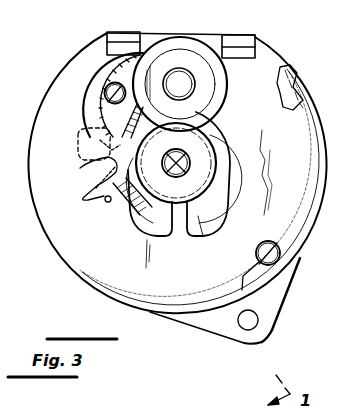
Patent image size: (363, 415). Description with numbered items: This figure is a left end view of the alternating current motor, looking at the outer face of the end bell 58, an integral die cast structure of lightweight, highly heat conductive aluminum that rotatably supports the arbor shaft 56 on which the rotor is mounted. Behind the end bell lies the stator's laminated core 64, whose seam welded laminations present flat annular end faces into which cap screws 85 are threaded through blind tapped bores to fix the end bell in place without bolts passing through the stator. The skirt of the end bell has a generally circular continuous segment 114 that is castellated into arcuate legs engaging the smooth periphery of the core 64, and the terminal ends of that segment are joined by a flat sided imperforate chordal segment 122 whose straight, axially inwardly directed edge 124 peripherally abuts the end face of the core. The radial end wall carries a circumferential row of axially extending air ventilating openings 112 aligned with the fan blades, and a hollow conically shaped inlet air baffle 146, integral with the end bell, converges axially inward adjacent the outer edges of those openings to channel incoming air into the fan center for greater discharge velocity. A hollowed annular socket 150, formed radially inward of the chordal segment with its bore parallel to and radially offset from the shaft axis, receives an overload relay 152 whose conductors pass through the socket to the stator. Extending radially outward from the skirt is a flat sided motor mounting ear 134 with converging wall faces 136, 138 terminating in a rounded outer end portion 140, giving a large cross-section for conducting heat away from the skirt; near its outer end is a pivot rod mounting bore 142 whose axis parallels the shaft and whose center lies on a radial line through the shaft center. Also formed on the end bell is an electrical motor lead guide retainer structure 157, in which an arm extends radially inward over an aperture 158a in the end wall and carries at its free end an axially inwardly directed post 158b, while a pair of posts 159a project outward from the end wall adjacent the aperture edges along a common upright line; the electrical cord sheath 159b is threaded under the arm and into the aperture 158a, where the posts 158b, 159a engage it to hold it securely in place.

The arbor shaft 56 is at (175, 135).
The end bell 58 is at (283, 50).
The laminated core 64 is at (208, 37).
The cap screws 85 is at (104, 92).
The air ventilating openings 112 is at (123, 120).
The continuous segment 114 is at (329, 180).
The chordal segment 122 is at (147, 32).
The axially inwardly directed edge 124 is at (300, 78).
The motor mounting ear 134 is at (280, 295).
The converging wall face 136 is at (282, 322).
The converging wall face 138 is at (205, 332).
The rounded outer end portion 140 is at (268, 344).
The pivot rod mounting bore 142 is at (250, 328).
The inlet air baffle 146 is at (124, 200).
The annular socket 150 is at (227, 83).
The overload relay 152 is at (176, 73).
The electrical motor lead guide retainer structure 157 is at (67, 155).
The aperture 158a is at (82, 197).
The post 158b is at (80, 128).
The posts 159a is at (138, 177).
The electrical cord sheath 159b is at (85, 196).